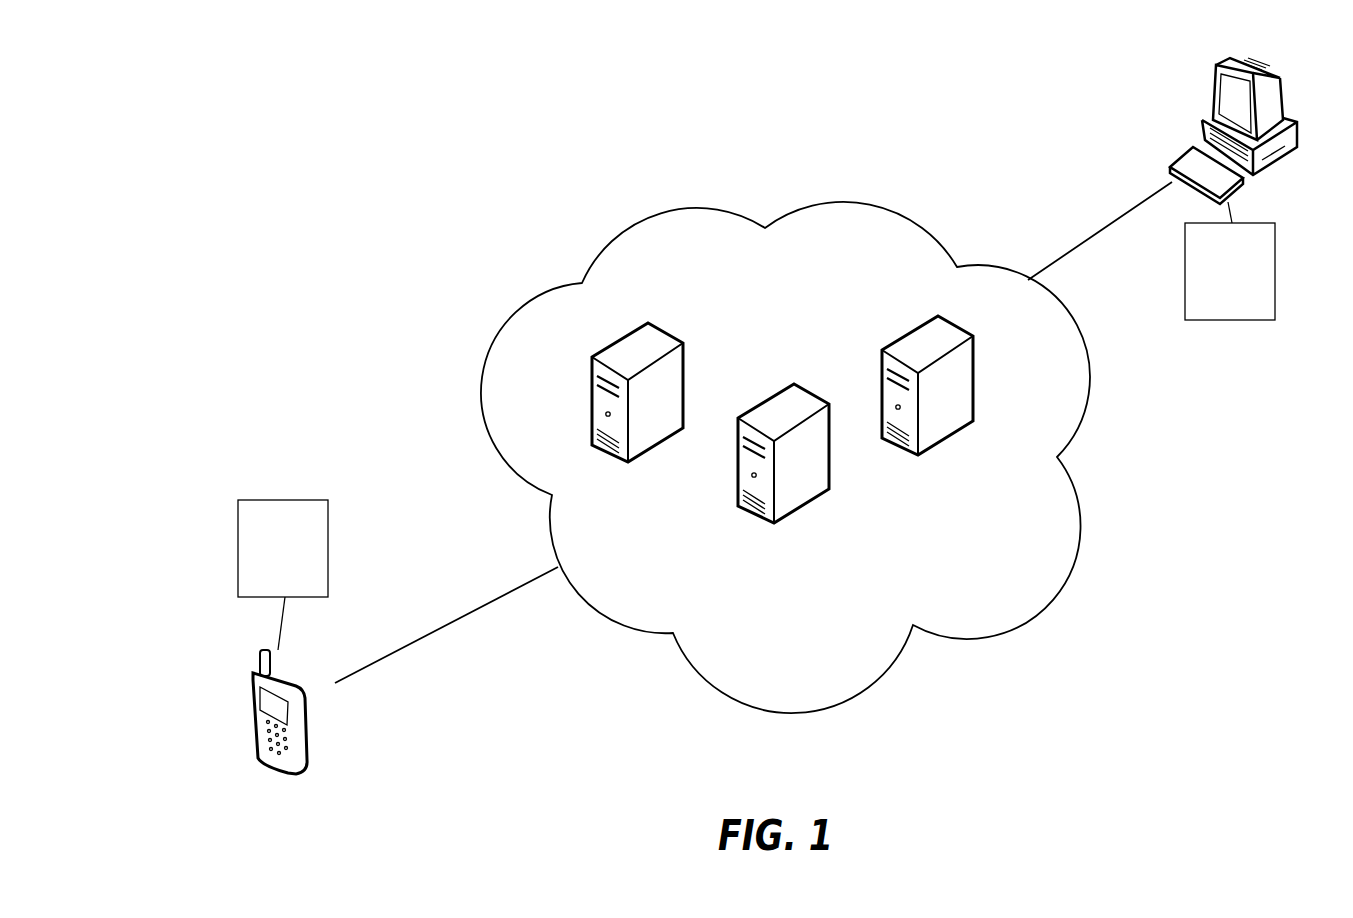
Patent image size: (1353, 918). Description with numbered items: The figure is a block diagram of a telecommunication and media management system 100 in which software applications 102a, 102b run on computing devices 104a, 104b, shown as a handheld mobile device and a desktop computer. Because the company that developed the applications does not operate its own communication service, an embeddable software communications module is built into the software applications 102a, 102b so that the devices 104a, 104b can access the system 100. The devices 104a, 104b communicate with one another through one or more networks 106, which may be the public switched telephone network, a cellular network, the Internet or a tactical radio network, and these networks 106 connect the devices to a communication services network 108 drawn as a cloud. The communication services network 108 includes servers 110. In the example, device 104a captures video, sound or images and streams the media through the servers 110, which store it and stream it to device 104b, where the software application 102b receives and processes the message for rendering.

The telecommunication and media management system 100 is at (448, 202).
The software application 102a is at (307, 559).
The software application 102b is at (1254, 282).
The computing device 104a is at (253, 725).
The computing device 104b is at (1205, 97).
The network 106 is at (460, 620).
The communication services network 108 is at (983, 630).
The server 110 is at (637, 323).